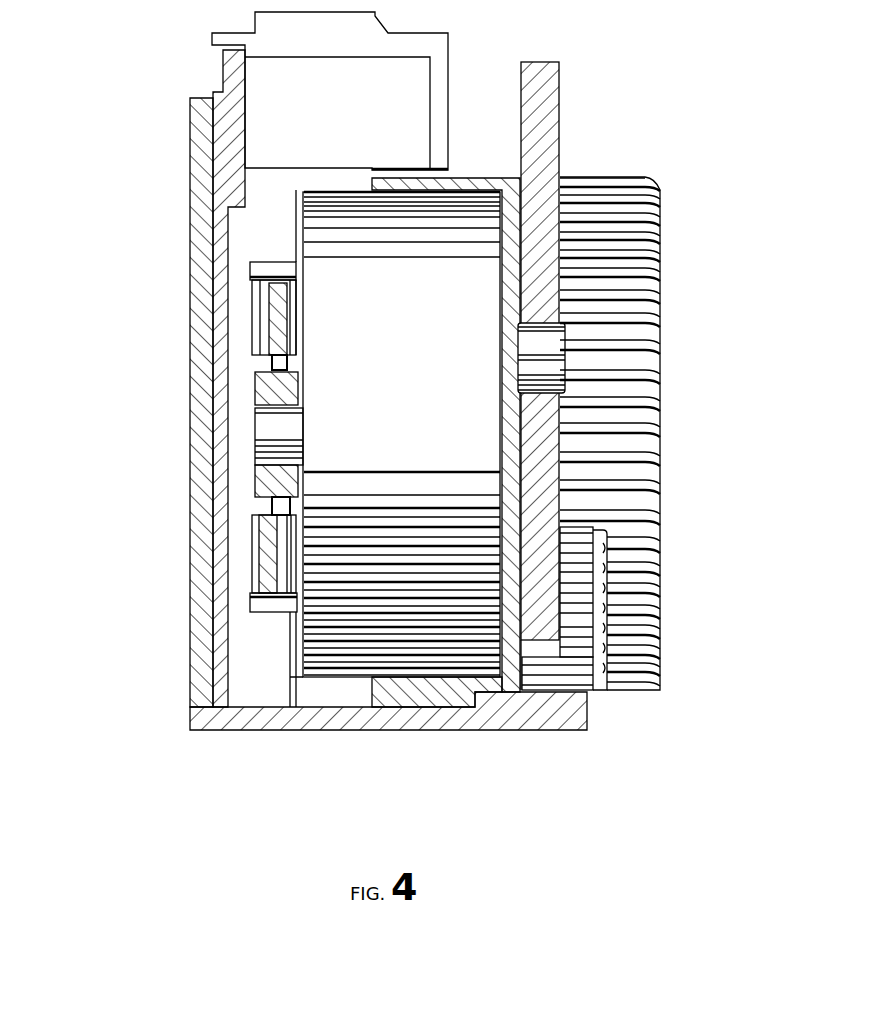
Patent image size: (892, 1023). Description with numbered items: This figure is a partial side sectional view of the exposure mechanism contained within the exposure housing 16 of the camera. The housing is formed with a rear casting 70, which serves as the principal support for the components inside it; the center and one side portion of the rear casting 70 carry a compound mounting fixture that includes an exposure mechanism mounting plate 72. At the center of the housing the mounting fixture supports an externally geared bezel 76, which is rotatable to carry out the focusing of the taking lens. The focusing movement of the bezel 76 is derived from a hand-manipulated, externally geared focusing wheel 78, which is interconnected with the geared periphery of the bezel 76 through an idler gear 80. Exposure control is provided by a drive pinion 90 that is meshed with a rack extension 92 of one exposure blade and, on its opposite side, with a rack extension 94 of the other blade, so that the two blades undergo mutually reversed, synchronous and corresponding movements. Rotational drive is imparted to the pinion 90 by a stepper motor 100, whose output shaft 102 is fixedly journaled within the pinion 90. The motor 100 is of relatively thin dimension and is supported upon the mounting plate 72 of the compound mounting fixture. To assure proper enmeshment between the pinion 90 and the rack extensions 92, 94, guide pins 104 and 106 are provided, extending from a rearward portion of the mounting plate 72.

The exposure housing 16 is at (163, 116).
The rear casting 70 is at (303, 715).
The exposure mechanism mounting plate 72 is at (237, 312).
The externally geared bezel 76 is at (633, 177).
The focusing wheel 78 is at (558, 98).
The idler gear 80 is at (568, 675).
The drive pinion 90 is at (273, 390).
The rack extension 92 is at (280, 307).
The rack extension 94 is at (280, 567).
The stepper motor 100 is at (443, 220).
The output shaft 102 is at (282, 425).
The guide pin 104 is at (262, 268).
The guide pin 106 is at (263, 602).